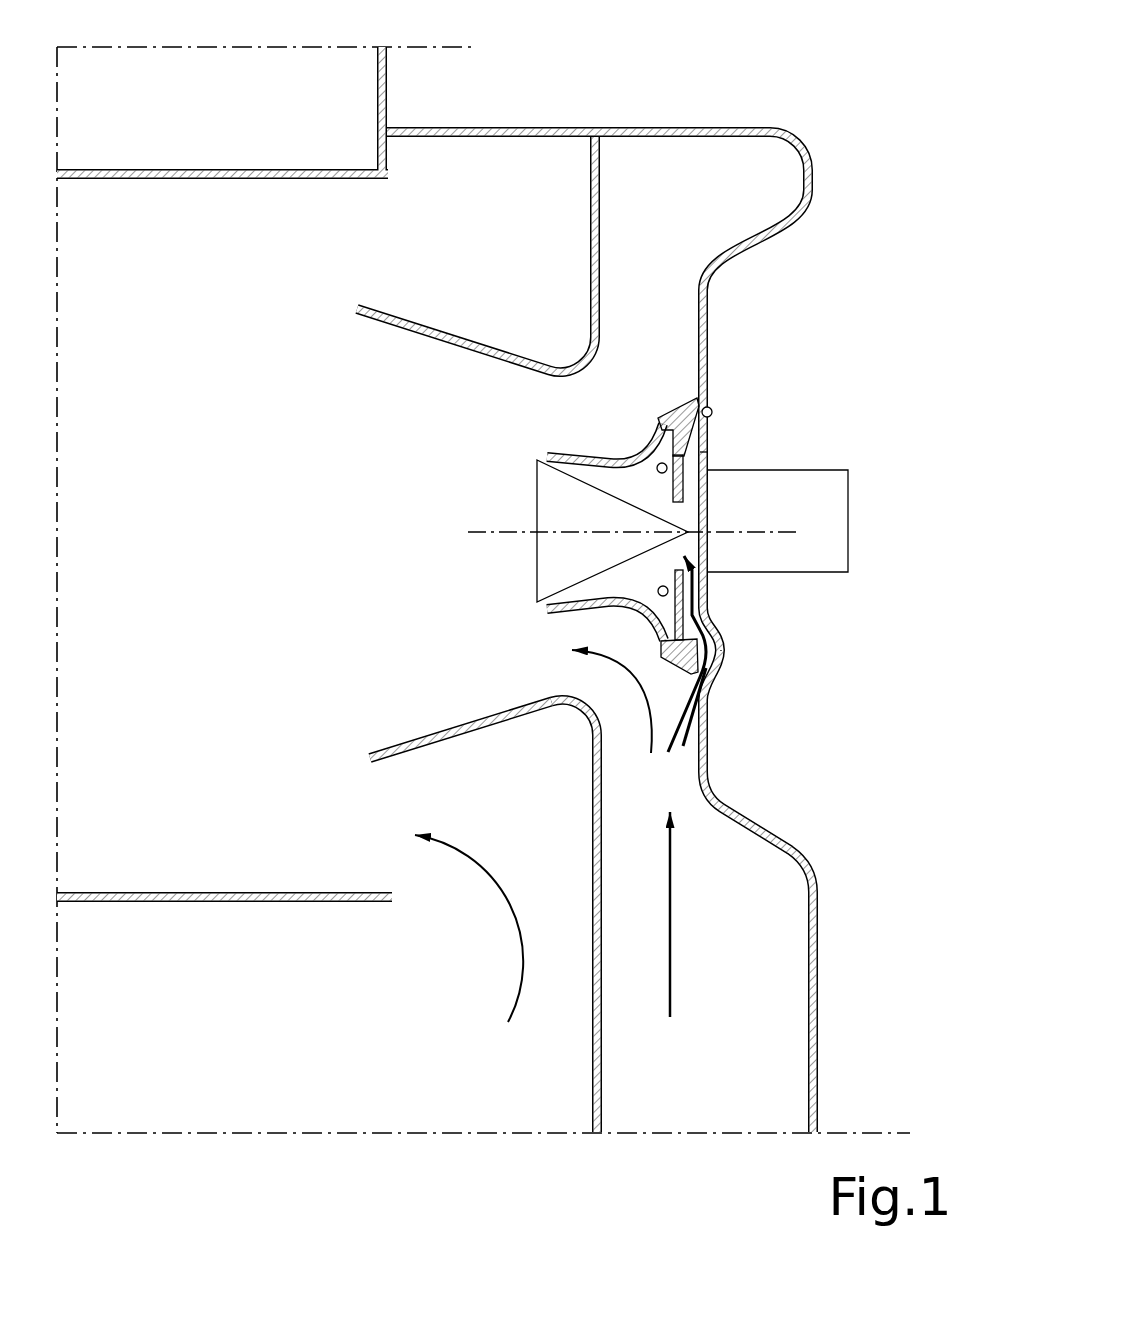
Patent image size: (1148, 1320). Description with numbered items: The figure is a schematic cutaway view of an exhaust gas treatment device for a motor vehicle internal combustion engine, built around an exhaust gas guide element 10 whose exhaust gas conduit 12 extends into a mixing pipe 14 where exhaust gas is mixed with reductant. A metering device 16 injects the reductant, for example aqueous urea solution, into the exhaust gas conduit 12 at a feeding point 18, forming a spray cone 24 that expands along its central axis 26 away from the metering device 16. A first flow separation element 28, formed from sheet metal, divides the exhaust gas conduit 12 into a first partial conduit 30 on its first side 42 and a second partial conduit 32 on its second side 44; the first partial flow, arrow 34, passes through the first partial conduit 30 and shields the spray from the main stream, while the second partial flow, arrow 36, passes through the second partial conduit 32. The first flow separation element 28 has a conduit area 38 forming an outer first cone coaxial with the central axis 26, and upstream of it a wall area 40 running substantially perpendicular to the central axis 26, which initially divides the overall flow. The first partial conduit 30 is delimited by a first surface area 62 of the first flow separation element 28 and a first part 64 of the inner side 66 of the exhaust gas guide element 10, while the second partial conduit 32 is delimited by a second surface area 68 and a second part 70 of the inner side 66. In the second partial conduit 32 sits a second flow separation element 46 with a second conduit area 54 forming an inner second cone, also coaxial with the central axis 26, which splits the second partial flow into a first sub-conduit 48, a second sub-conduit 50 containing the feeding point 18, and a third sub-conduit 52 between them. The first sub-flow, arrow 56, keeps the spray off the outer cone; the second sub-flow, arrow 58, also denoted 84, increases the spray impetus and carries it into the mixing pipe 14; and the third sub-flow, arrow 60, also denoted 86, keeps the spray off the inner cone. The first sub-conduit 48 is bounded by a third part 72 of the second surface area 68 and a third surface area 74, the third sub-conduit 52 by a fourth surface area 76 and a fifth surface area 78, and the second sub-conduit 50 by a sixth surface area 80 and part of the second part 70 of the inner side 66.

The exhaust gas guide element 10 is at (758, 123).
The exhaust gas conduit 12 is at (187, 842).
The mixing pipe 14 is at (148, 168).
The metering device 16 is at (850, 470).
The feeding point 18 is at (687, 518).
The spray cone 24 is at (537, 540).
The central axis 26 is at (496, 528).
The first flow separation element 28 is at (582, 973).
The first partial conduit 30 is at (534, 928).
The second partial conduit 32 is at (724, 916).
The arrow 34 is at (505, 985).
The arrow 36 is at (677, 983).
The conduit area 38 is at (460, 318).
The wall area 40 is at (607, 182).
The first side 42 is at (417, 768).
The second side 44 is at (622, 805).
The second flow separation element 46 is at (682, 397).
The first sub-conduit 48 is at (556, 688).
The second sub-conduit 50 is at (702, 593).
The third sub-conduit 52 is at (658, 608).
The second conduit area 54 is at (583, 450).
The arrow 56 is at (643, 717).
The arrow 58 is at (722, 656).
The arrow 60 is at (690, 692).
The first surface area 62 is at (540, 850).
The first part 64 is at (435, 873).
The inner side 66 is at (228, 890).
The second surface area 68 is at (640, 772).
The second part 70 is at (705, 803).
The third part 72 is at (607, 700).
The third surface area 74 is at (577, 623).
The fourth surface area 76 is at (592, 590).
The fifth surface area 78 is at (650, 575).
The sixth surface area 80 is at (717, 637).
The second sub-flow 84 is at (713, 412).
The third sub-flow 86 is at (668, 468).